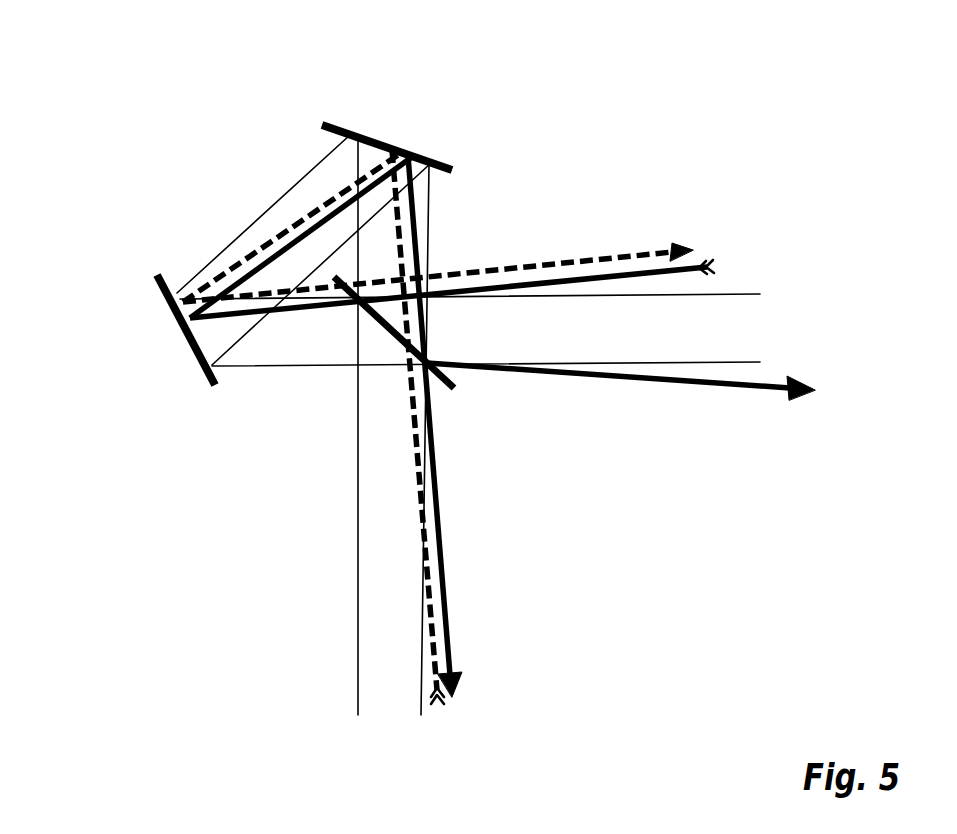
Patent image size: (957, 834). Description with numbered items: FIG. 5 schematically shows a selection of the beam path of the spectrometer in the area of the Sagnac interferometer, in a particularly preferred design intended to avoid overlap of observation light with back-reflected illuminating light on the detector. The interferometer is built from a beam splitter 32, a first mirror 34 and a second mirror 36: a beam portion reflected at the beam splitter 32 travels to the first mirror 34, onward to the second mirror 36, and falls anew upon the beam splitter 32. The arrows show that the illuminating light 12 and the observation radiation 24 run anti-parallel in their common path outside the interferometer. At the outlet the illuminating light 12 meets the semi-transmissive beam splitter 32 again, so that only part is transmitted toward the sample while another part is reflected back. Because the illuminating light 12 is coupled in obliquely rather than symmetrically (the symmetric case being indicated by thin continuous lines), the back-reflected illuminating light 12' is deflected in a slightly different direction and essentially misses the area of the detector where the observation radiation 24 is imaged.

The illuminating light 12 is at (537, 463).
The back-reflected illuminating light 12' is at (656, 426).
The observation radiation 24 is at (607, 253).
The beam splitter 32 is at (457, 380).
The first mirror 34 is at (187, 343).
The second mirror 36 is at (378, 141).